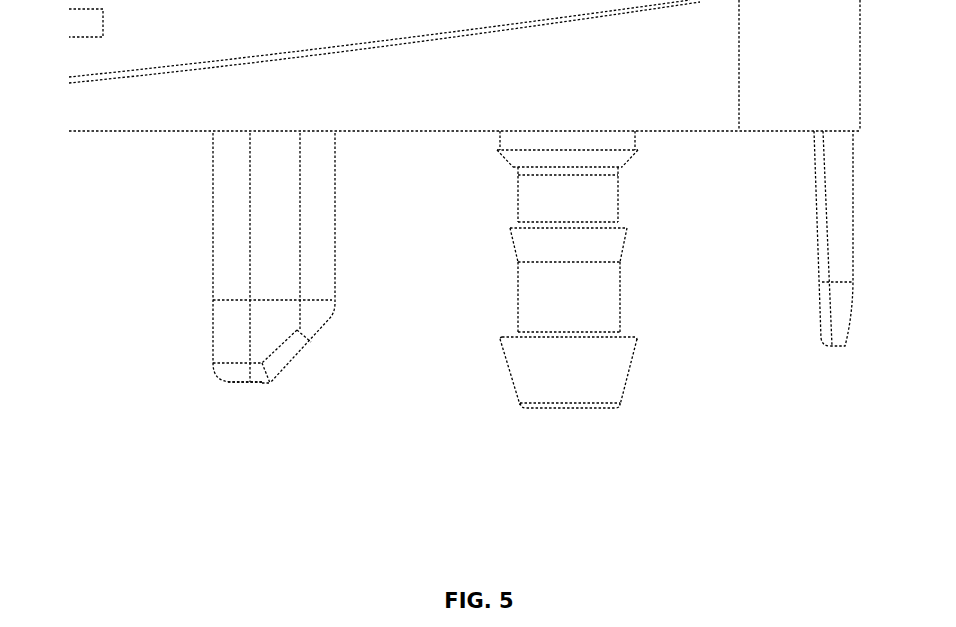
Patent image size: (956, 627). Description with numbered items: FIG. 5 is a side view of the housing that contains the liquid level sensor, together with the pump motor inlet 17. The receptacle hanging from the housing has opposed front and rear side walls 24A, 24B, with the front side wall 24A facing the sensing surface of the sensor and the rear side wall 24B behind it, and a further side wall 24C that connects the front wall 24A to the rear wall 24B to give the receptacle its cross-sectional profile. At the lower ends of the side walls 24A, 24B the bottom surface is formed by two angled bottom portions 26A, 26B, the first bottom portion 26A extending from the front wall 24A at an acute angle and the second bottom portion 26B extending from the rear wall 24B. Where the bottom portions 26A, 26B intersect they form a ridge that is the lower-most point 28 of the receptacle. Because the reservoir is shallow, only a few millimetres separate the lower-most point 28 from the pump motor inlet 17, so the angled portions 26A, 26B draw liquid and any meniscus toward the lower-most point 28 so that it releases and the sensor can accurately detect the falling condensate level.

The pump motor inlet 17 is at (590, 424).
The side wall 24A is at (213, 271).
The side wall 24B is at (335, 275).
The side wall 24C is at (246, 220).
The bottom portion 26A is at (243, 383).
The bottom portion 26B is at (288, 367).
The lower-most point 28 is at (268, 398).